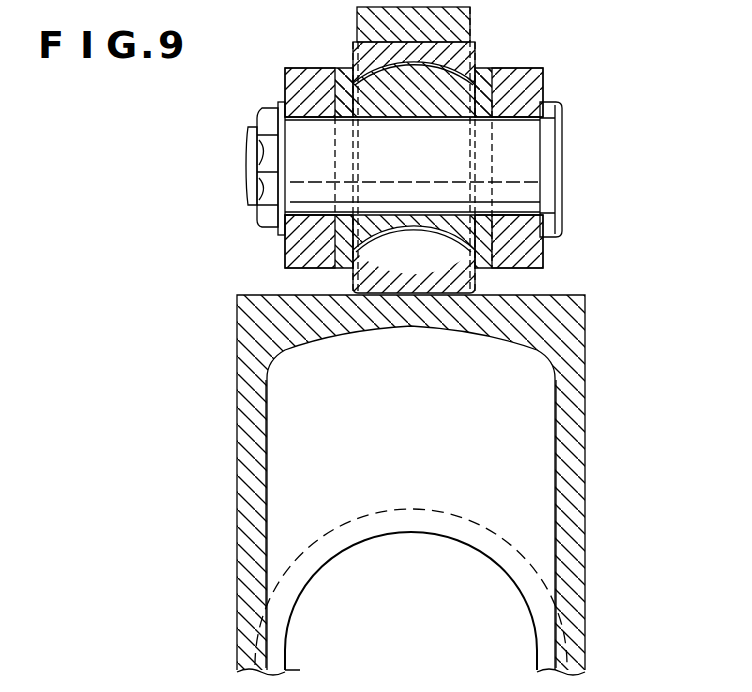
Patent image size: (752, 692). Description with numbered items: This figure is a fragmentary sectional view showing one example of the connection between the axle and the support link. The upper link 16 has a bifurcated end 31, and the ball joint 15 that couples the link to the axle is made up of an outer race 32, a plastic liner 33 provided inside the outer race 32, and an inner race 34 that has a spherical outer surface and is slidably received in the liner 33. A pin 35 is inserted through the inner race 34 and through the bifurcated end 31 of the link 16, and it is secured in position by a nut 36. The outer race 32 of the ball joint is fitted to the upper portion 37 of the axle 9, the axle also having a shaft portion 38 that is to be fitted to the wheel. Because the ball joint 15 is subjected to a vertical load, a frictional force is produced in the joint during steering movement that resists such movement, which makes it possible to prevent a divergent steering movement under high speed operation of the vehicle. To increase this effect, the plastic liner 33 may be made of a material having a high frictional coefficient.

The ball joint 15 is at (347, 48).
The inner race 34 is at (437, 88).
The bifurcated end 31 is at (517, 80).
The upper link 16 is at (548, 82).
The pin 35 is at (522, 152).
The nut 36 is at (265, 147).
The plastic liner 33 is at (358, 276).
The outer race 32 is at (450, 279).
The upper portion 37 is at (572, 328).
The axle 9 is at (572, 480).
The shaft portion 38 is at (472, 514).